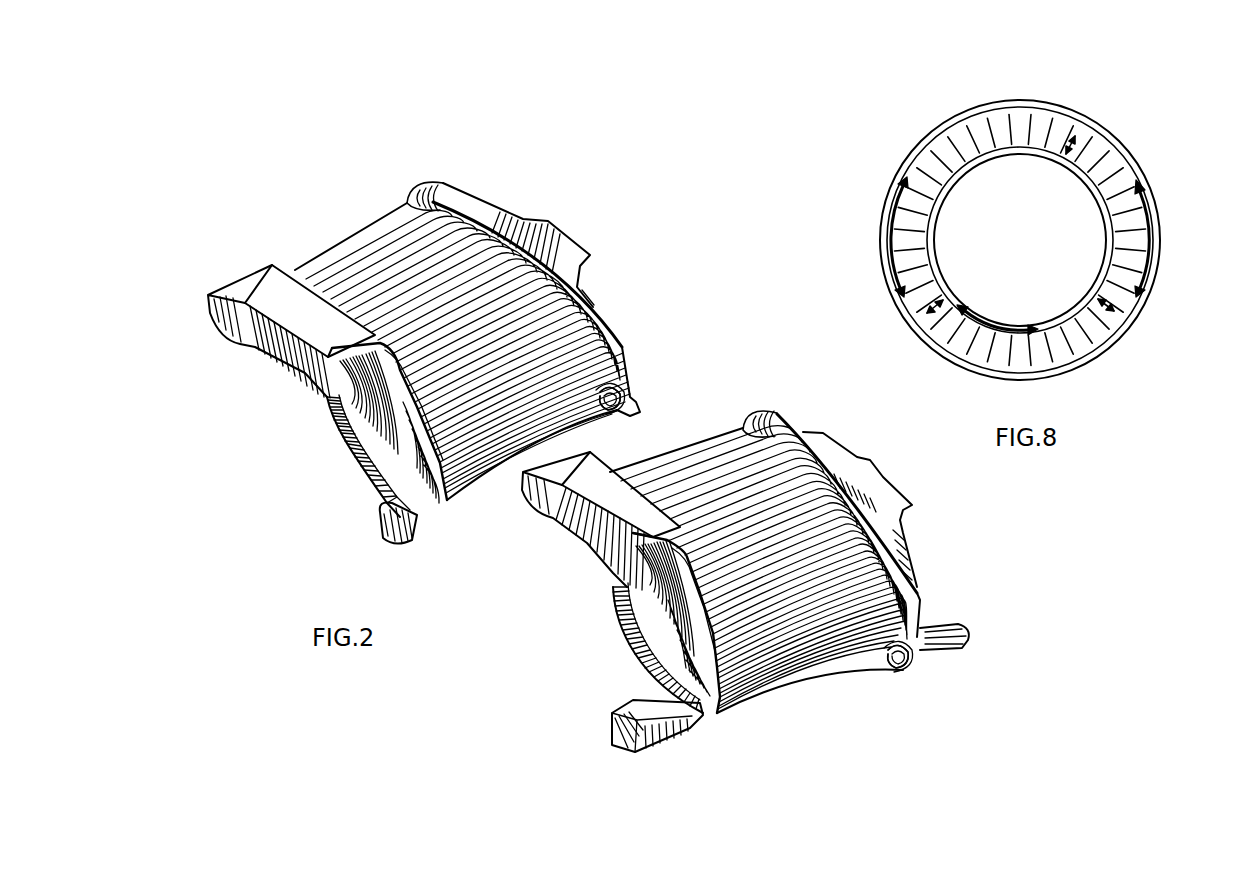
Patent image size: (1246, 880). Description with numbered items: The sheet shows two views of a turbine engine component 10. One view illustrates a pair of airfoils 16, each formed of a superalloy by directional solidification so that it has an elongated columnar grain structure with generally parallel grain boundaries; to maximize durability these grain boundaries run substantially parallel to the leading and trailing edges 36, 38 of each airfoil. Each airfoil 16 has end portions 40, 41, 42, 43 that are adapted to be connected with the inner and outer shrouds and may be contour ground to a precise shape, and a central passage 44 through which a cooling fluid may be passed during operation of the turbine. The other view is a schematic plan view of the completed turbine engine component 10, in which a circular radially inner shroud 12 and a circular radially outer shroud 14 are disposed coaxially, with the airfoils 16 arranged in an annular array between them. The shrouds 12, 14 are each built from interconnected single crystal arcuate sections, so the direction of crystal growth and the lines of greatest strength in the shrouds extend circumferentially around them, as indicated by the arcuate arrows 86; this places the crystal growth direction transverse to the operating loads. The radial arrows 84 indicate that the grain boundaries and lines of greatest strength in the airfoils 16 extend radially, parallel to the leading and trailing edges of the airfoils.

In FIG. 8, the turbine engine component 10 is at (1016, 225).
In FIG. 8, the radially inner shroud 12 is at (990, 150).
In FIG. 8, the radially outer shroud 14 is at (1007, 99).
In FIG. 2, the airfoil 16 is at (343, 252).
In FIG. 8, the airfoil 16 is at (1073, 330).
In FIG. 2, the leading edge 36 is at (594, 414).
In FIG. 2, the trailing edge 38 is at (304, 276).
In FIG. 2, the end portion 40 is at (683, 728).
In FIG. 2, the end portion 41 is at (427, 523).
In FIG. 2, the end portion 42 is at (950, 645).
In FIG. 2, the end portion 43 is at (521, 236).
In FIG. 2, the central passage 44 is at (380, 458).
In FIG. 8, the radial arrows 84 is at (1075, 148).
In FIG. 8, the arcuate arrows 86 is at (880, 238).